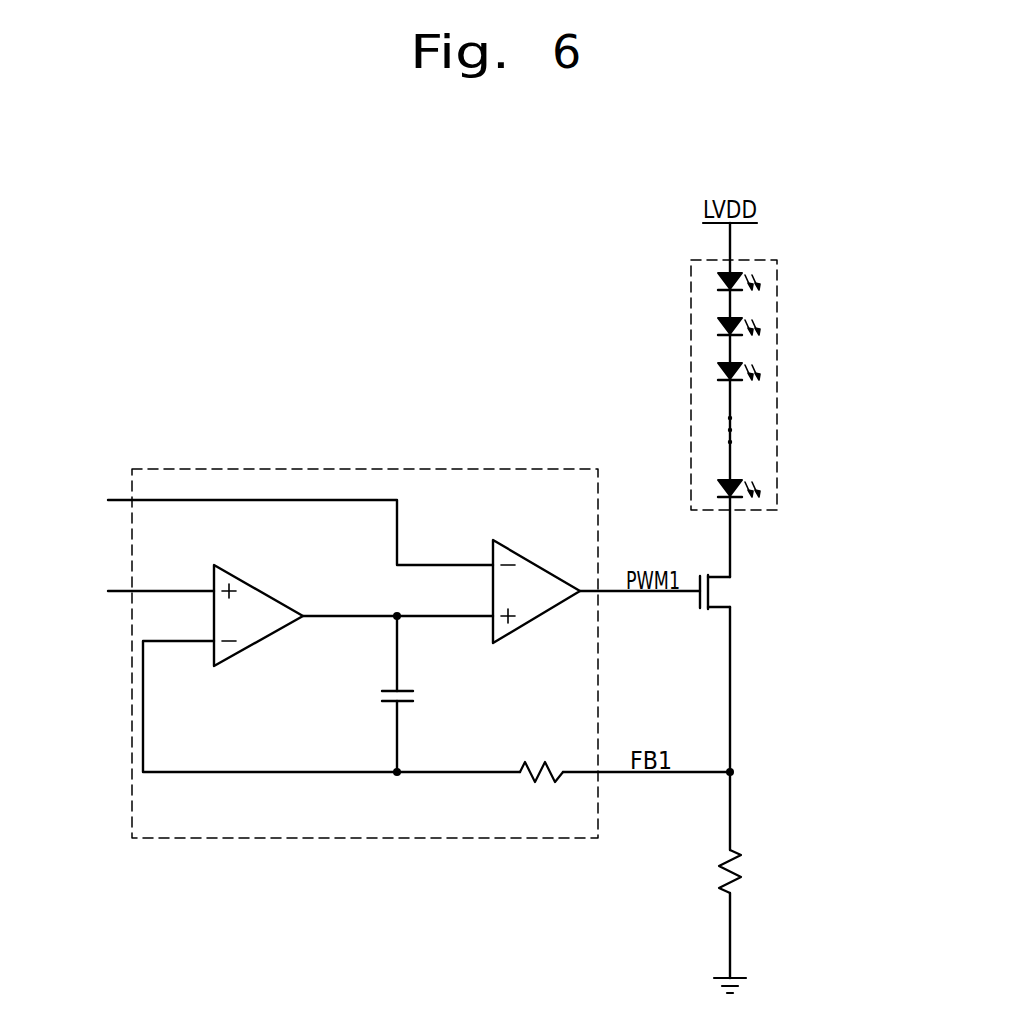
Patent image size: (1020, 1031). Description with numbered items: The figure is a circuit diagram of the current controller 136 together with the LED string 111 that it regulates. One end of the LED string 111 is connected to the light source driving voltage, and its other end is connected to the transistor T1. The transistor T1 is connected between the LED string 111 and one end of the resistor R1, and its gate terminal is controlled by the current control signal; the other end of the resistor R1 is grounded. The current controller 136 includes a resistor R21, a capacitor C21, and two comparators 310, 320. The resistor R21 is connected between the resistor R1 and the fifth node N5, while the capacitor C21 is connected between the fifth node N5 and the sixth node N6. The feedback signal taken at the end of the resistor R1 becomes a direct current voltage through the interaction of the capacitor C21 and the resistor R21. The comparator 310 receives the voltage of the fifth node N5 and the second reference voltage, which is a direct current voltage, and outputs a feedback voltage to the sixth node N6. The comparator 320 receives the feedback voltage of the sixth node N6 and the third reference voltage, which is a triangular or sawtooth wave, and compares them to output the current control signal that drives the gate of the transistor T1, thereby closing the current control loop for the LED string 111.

The LED string 111 is at (778, 376).
The current controller 136 is at (453, 469).
The comparator 310 is at (258, 588).
The comparator 320 is at (537, 560).
The transistor T1 is at (728, 592).
The resistor R1 is at (743, 871).
The resistor R21 is at (542, 791).
The capacitor C21 is at (418, 697).
The fifth node N5 is at (400, 774).
The sixth node N6 is at (400, 618).